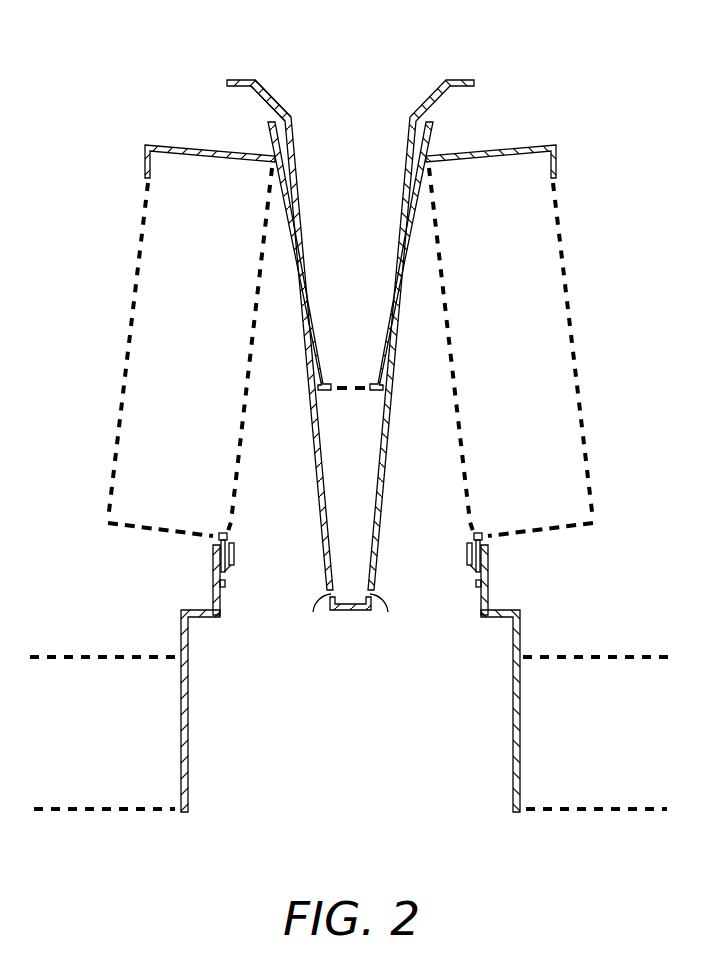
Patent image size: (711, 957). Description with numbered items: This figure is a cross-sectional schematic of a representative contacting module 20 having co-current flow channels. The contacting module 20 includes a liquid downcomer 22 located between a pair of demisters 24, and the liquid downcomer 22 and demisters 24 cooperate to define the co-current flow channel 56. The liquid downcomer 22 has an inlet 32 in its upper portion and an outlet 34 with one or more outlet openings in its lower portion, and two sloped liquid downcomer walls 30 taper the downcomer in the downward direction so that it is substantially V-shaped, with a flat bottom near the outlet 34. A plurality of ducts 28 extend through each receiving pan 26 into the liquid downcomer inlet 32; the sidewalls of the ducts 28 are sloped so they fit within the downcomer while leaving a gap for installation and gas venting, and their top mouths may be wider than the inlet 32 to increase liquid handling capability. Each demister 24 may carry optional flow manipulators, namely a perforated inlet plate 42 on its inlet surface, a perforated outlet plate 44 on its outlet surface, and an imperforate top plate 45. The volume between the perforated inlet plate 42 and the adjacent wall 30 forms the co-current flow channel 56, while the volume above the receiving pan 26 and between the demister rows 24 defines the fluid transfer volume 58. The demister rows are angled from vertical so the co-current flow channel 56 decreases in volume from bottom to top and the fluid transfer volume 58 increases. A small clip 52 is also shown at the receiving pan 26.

The contacting module 20 is at (92, 50).
The liquid downcomer 22 is at (298, 424).
The demister 24 is at (207, 339).
The receiving pan 26 is at (196, 587).
The duct 28 is at (308, 153).
The liquid downcomer wall 30 is at (386, 418).
The inlet 32 is at (282, 118).
The outlet 34 is at (354, 615).
The perforated inlet plate 42 is at (243, 416).
The perforated outlet plate 44 is at (143, 242).
The imperforate top plate 45 is at (167, 144).
The clip 52 is at (236, 557).
The co-current flow channel 56 is at (290, 478).
The fluid transfer volume 58 is at (72, 339).